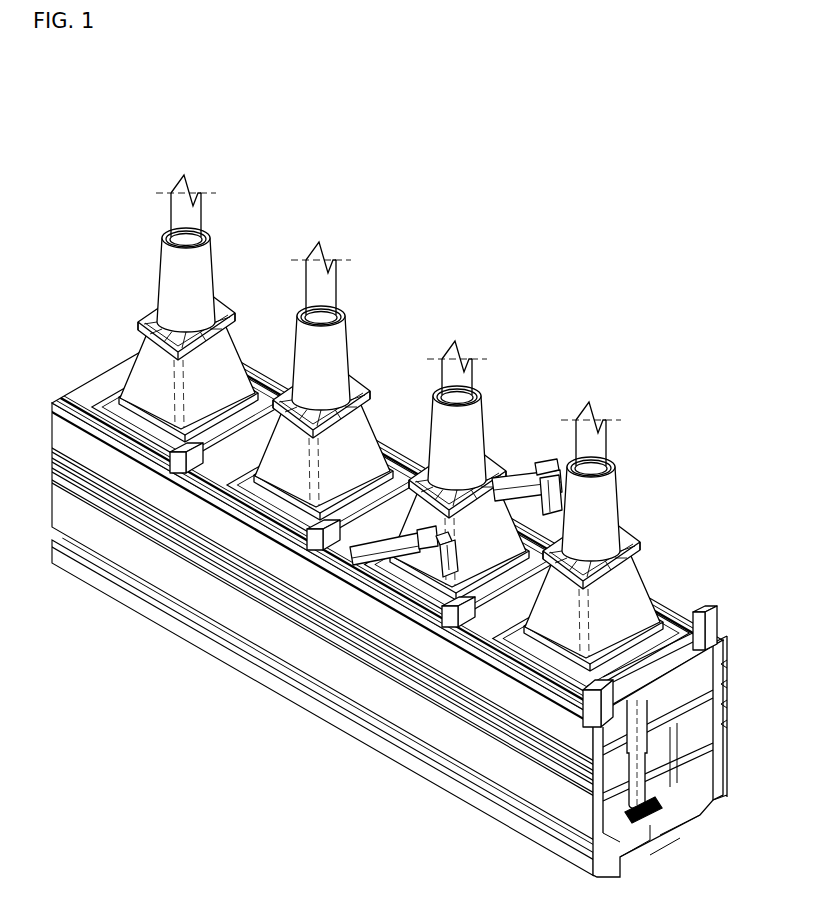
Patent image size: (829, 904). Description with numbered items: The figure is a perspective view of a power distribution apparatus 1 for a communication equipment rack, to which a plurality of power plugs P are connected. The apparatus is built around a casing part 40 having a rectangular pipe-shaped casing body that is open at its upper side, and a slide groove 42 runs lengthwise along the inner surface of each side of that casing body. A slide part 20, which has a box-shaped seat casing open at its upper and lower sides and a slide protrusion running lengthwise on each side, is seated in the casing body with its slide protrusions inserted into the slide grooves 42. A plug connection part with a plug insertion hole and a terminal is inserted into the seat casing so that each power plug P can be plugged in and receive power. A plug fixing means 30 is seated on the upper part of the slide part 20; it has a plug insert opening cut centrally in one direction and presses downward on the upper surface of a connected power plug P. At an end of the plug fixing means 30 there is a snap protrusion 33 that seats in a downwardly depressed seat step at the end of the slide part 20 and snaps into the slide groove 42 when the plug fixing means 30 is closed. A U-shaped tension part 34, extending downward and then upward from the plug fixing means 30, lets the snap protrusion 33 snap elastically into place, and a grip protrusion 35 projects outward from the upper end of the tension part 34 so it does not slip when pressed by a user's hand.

The power distribution apparatus 1 is at (114, 134).
The slide part 20 is at (122, 346).
The power plug P is at (231, 305).
The plug fixing means 30 is at (542, 446).
The snap protrusion 33 is at (430, 578).
The tension part 34 is at (607, 464).
The grip protrusion 35 is at (563, 480).
The casing part 40 is at (211, 666).
The slide groove 42 is at (727, 630).